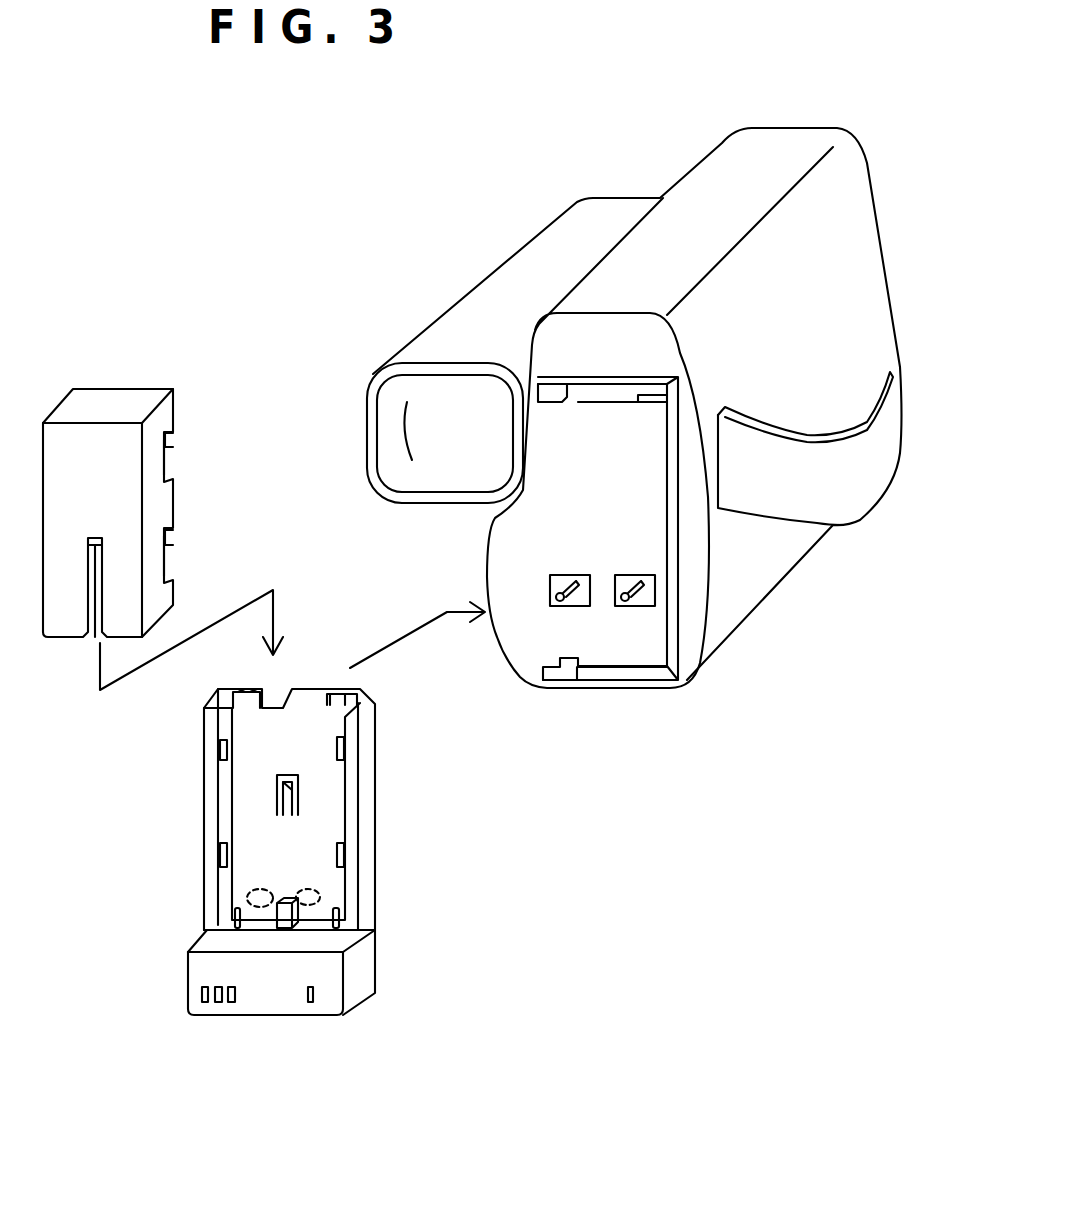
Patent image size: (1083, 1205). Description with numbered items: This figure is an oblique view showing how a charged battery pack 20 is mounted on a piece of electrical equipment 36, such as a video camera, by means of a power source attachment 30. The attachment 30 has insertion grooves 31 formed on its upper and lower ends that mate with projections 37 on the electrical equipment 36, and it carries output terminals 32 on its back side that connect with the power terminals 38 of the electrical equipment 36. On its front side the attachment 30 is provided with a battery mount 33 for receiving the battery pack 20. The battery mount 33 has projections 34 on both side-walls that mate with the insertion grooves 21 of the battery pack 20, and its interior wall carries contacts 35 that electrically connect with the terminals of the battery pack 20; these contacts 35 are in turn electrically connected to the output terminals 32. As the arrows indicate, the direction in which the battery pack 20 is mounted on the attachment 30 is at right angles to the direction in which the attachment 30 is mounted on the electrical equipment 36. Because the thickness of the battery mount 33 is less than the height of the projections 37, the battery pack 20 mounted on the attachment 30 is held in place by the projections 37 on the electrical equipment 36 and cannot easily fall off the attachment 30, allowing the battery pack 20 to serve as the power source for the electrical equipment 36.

The battery pack 20 is at (108, 405).
The insertion grooves 21 is at (173, 573).
The power source attachment 30 is at (367, 967).
The insertion grooves 31 is at (246, 690).
The output terminals 32 is at (248, 885).
The battery mount 33 is at (248, 780).
The projections 34 is at (222, 743).
The contacts 35 is at (233, 917).
The electrical equipment 36 is at (540, 248).
The projections 37 is at (547, 375).
The power terminals 38 is at (578, 604).